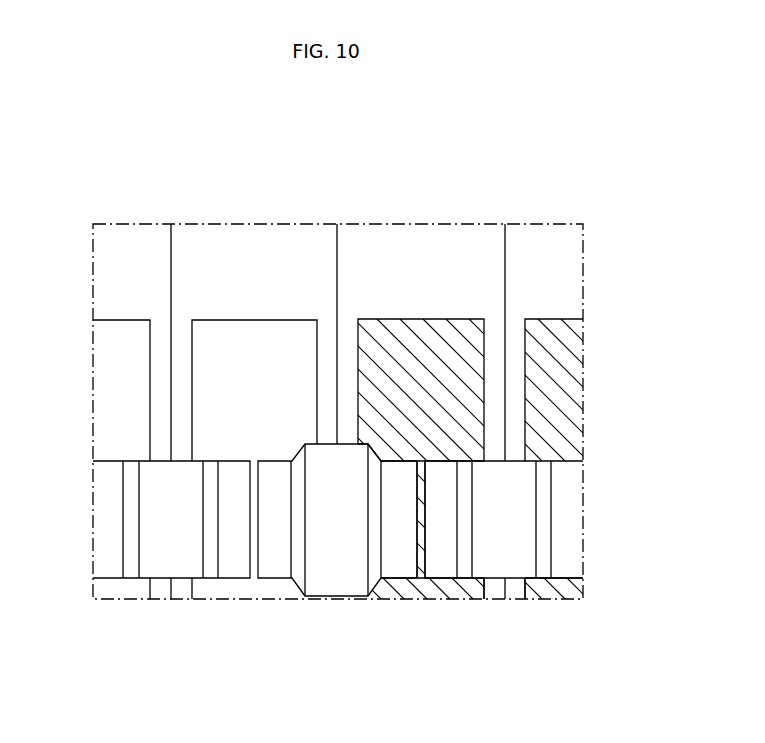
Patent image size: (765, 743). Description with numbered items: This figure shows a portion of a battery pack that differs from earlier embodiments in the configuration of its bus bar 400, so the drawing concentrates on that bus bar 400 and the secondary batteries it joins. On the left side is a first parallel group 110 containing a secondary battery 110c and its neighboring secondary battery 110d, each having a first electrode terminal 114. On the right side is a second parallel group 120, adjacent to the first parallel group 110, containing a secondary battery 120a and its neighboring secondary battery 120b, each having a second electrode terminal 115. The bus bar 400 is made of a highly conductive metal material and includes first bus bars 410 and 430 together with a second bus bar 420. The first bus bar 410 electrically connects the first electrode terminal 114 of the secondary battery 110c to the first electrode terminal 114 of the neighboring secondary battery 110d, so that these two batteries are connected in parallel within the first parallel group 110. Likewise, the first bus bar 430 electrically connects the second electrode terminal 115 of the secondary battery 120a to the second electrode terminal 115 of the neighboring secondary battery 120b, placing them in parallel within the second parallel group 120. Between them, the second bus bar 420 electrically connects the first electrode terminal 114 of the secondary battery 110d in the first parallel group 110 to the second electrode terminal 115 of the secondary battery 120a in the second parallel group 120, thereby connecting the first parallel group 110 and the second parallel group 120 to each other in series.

The first parallel group 110 is at (250, 153).
The secondary battery 110c is at (131, 243).
The secondary battery 110d is at (225, 243).
The first electrode terminal 114 is at (110, 423).
The second parallel group 120 is at (560, 153).
The secondary battery 120a is at (441, 243).
The secondary battery 120b is at (535, 243).
The second electrode terminal 115 is at (567, 421).
The bus bar 400 is at (260, 672).
The first bus bar 410 is at (176, 567).
The second bus bar 420 is at (340, 563).
The first bus bar 430 is at (508, 567).